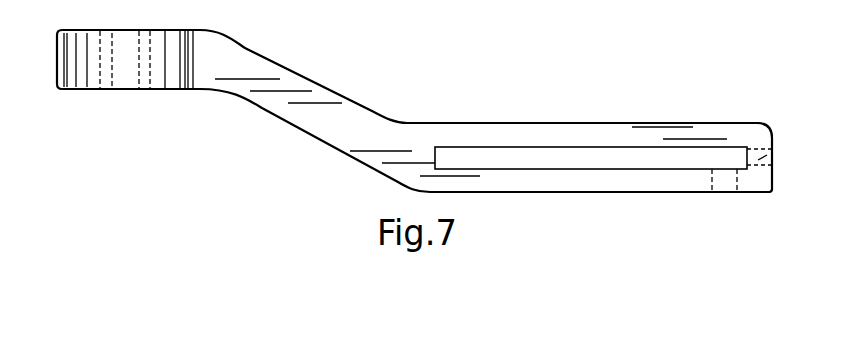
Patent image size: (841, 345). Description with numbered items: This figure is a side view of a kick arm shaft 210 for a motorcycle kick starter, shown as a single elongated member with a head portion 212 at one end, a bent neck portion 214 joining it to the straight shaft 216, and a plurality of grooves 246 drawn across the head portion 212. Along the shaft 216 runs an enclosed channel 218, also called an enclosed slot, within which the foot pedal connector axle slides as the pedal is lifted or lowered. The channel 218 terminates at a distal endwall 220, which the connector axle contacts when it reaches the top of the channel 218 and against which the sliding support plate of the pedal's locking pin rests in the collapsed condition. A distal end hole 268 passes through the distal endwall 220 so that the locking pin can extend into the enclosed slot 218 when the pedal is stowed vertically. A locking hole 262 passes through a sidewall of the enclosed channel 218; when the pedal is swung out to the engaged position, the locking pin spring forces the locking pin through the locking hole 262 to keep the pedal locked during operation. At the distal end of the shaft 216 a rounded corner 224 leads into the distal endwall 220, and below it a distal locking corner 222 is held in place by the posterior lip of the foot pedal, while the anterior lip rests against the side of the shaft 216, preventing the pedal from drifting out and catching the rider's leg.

The tool 210 is at (262, 200).
The head portion 212 is at (102, 88).
The groove 246 is at (139, 89).
The angled neck portion 214 is at (315, 82).
The shaft 216 is at (615, 192).
The enclosed channel 218 is at (685, 158).
The distal endwall 220 is at (772, 140).
The distal locking corner 222 is at (772, 192).
The rounded corner 224 is at (769, 137).
The locking hole 262 is at (723, 180).
The distal end hole 268 is at (773, 156).